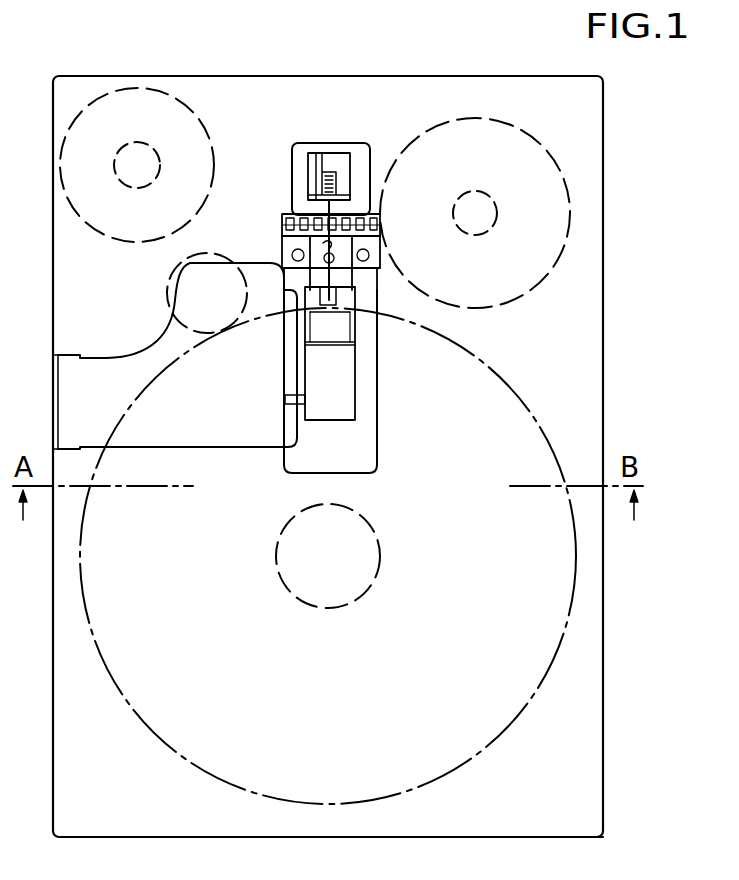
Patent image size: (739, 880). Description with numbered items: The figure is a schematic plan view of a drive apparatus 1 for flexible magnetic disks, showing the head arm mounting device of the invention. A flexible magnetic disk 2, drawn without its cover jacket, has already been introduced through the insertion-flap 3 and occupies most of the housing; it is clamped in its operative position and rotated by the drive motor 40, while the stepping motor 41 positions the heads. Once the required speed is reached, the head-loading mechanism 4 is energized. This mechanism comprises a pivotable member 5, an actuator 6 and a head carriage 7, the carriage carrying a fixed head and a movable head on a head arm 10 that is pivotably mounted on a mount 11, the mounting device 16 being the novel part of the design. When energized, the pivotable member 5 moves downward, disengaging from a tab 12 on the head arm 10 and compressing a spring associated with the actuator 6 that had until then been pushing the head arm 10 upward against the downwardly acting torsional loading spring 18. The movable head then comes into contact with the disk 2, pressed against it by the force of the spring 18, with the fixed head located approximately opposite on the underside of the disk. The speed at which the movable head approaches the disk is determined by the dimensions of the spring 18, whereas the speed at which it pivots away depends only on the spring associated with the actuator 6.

The drive apparatus 1 is at (553, 73).
The flexible magnetic disk 2 is at (447, 513).
The insertion-flap 3 is at (495, 836).
The head-loading mechanism 4 is at (140, 331).
The pivotable member 5 is at (105, 357).
The actuator 6 is at (221, 277).
The head carriage 7 is at (383, 303).
The head arm 10 is at (343, 325).
The mount 11 is at (290, 213).
The tab 12 is at (287, 403).
The mounting device 16 is at (331, 179).
The torsional loading spring 18 is at (323, 185).
The drive motor 40 is at (122, 108).
The stepping motor 41 is at (473, 140).